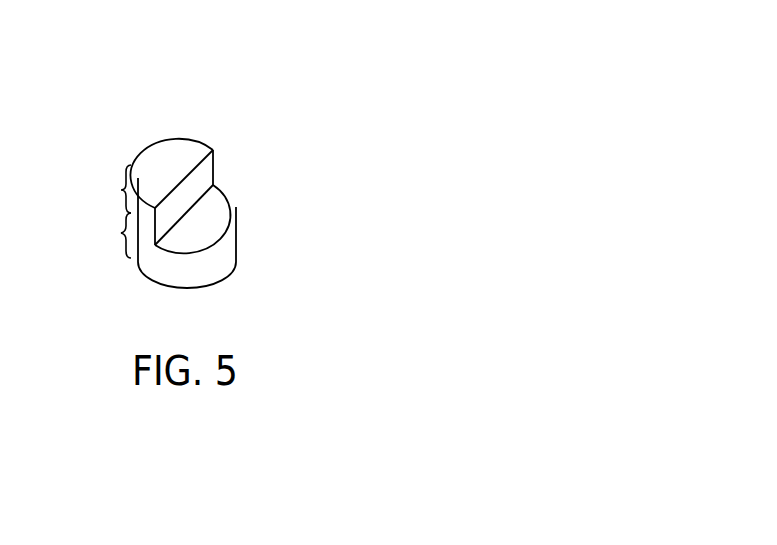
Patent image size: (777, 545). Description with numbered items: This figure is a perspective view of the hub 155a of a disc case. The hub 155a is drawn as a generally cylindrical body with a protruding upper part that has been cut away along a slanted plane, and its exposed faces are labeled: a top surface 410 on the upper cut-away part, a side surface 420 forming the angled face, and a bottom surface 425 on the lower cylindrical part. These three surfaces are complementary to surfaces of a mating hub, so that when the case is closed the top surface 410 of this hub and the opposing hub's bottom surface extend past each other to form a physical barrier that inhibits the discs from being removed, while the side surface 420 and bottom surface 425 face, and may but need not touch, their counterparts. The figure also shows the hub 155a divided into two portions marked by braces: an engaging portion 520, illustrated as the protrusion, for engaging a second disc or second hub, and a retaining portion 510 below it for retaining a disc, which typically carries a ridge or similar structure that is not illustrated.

The hub 155a is at (344, 79).
The top surface 410 is at (178, 155).
The side surface 420 is at (205, 173).
The bottom surface 425 is at (217, 211).
The retaining portion 510 is at (122, 233).
The engaging portion 520 is at (122, 190).